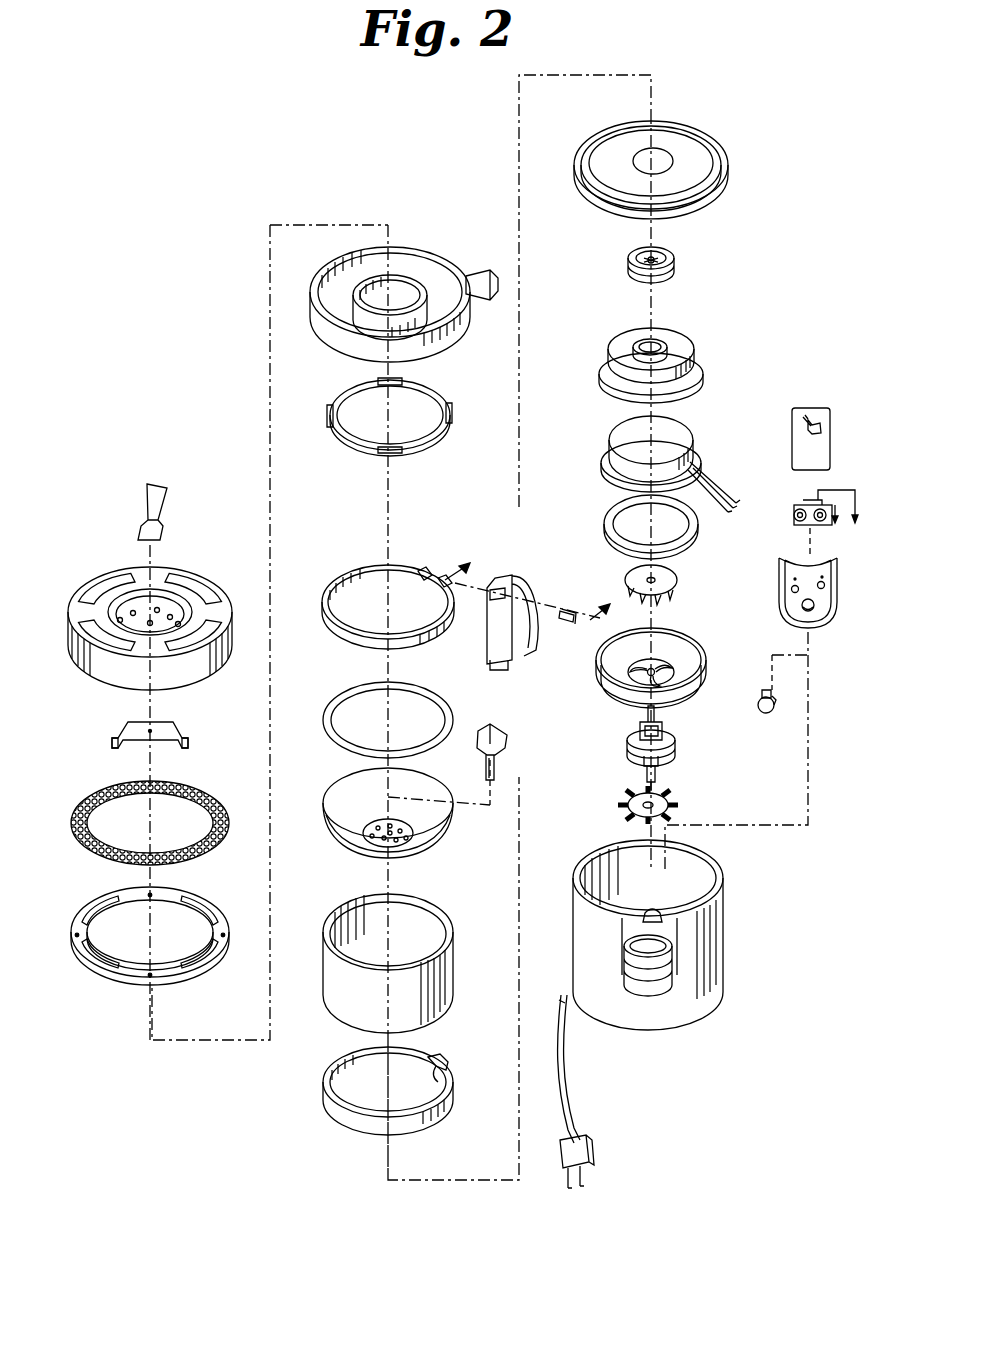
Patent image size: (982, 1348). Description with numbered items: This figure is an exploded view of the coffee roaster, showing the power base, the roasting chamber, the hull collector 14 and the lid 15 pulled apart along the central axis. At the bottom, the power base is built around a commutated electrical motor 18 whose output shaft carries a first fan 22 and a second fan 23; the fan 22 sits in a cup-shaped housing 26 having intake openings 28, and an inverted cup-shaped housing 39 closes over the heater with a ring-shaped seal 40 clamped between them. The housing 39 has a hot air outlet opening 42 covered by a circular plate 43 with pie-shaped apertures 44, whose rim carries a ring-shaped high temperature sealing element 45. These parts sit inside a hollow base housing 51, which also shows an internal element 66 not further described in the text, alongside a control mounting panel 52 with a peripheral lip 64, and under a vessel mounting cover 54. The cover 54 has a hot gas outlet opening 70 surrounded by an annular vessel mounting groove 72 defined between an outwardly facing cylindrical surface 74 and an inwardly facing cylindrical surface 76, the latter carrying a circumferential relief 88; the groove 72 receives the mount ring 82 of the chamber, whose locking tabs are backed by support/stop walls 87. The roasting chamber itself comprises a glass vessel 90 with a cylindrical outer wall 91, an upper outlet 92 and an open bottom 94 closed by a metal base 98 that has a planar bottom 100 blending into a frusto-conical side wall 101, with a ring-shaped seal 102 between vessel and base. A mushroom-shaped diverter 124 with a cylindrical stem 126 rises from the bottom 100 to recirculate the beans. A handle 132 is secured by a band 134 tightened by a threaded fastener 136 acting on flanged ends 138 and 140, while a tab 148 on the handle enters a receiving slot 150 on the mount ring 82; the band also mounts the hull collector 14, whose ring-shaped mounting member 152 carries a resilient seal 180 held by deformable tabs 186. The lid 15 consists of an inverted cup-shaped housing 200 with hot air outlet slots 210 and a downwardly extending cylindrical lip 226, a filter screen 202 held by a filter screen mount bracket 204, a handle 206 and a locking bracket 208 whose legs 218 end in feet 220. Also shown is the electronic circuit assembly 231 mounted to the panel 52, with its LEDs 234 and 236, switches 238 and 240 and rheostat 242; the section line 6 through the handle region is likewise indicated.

The section line 6- 6 is at (528, 581).
The chaff/hull receiver or collector 14 is at (418, 287).
The lid 15 is at (172, 565).
The commutated electrical motor 18 is at (672, 747).
The first fan or impeller 22 is at (676, 578).
The second fan or impeller 23 is at (672, 800).
The cup-shaped housing 26 is at (669, 660).
The intake openings 28 is at (672, 672).
The inverted cup-shaped housing 39 is at (669, 347).
The ring-shaped seal 40 is at (690, 530).
The hot air outlet opening 42 is at (660, 342).
The circular plate 43 is at (632, 256).
The pie-shaped apertures 44 is at (635, 274).
The high temperature sealing element 45 is at (654, 259).
The base housing 51 is at (671, 950).
The control mounting panel 52 is at (809, 599).
The vessel mounting cover 54 is at (668, 162).
The lip 64 is at (838, 592).
The socket 66 is at (651, 978).
The hot gas outlet opening 70 is at (660, 152).
The vessel mounting groove 72 is at (728, 162).
The radially outwardly facing cylindrical surface 74 is at (602, 203).
The radially inwardly facing cylindrical surface 76 is at (610, 130).
The mount ring 82 is at (414, 1096).
The support/stop walls 87 is at (716, 133).
The circumferentially extending relief 88 is at (442, 1062).
The vessel 90 is at (394, 952).
The outer wall 91 is at (456, 960).
The upper outlet 92 is at (415, 902).
The open bottom 94 is at (440, 1026).
The lower wall or base 98 is at (448, 825).
The planar bottom 100 is at (370, 845).
The frusto-conical side wall 101 is at (393, 817).
The ring-shaped seal 102 is at (426, 688).
The diverter 124 is at (521, 740).
The cylindrical stem 126 is at (496, 768).
The handle 132 is at (525, 604).
The band 134 is at (386, 581).
The threaded fastener 136 is at (566, 607).
The flanged end 138 is at (424, 570).
The flanged end 140 is at (440, 584).
The tab 148 is at (508, 668).
The receiving slot 150 is at (446, 1073).
The ring-shaped mounting member 152 is at (470, 322).
The resilient seal 180 is at (413, 419).
The deformable tabs 186 is at (404, 380).
The inverted cup shaped housing 200 is at (164, 620).
The filter screen 202 is at (225, 800).
The filter screen mount bracket 204 is at (200, 975).
The handle 206 is at (157, 484).
The locking bracket 208 is at (166, 723).
The slots 210 is at (106, 578).
The legs 218 is at (126, 731).
The feet 220 is at (112, 745).
The cylindrical lip 226 is at (205, 670).
The electronic circuit assembly 231 is at (781, 420).
The LED 234 is at (807, 509).
The LED 236 is at (830, 492).
The switch 238 is at (795, 522).
The switch 240 is at (822, 525).
The rheostat 242 is at (792, 443).